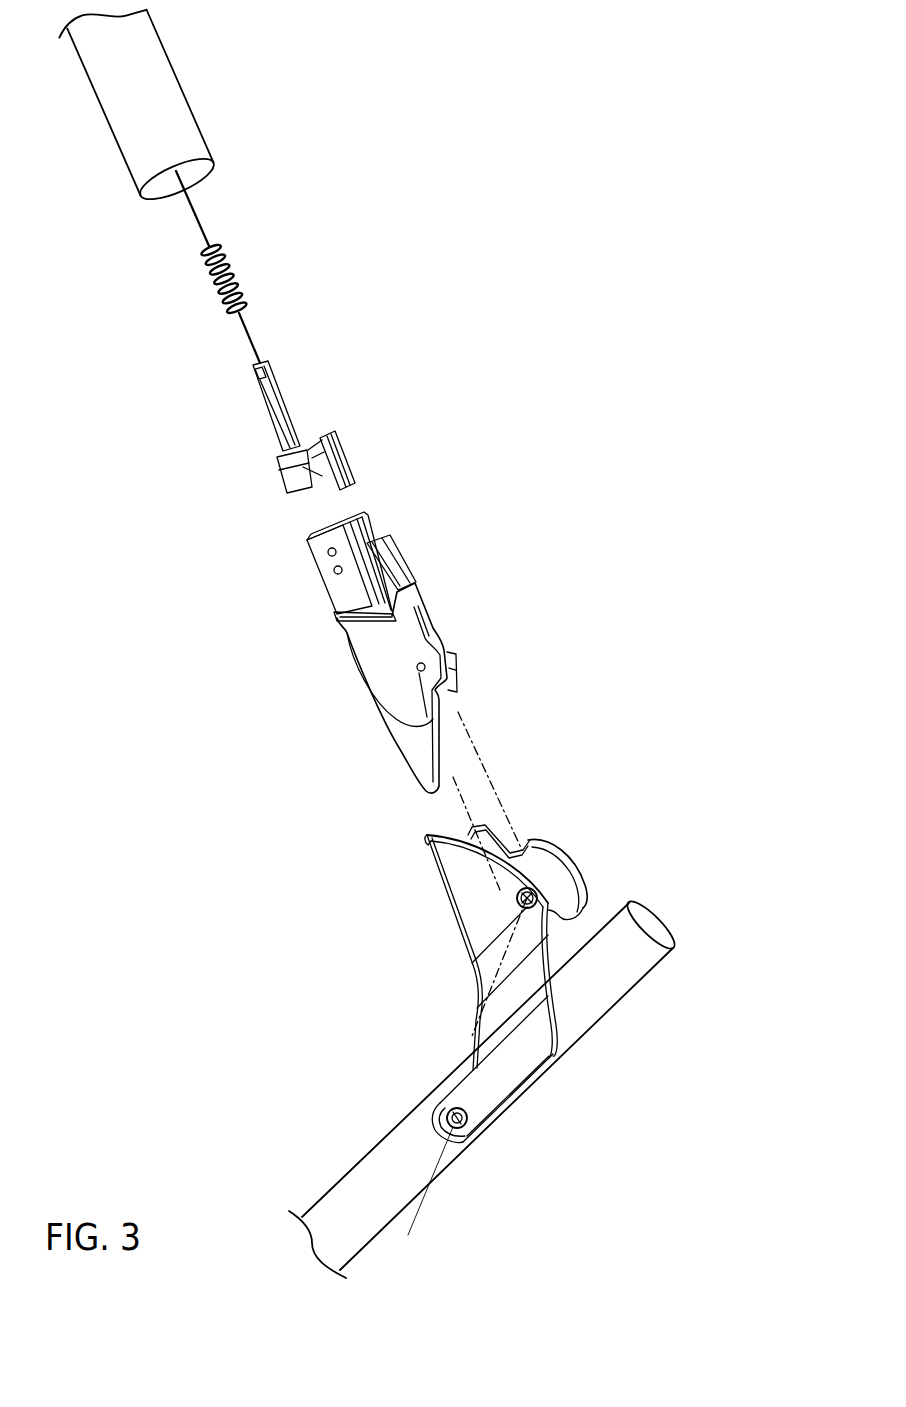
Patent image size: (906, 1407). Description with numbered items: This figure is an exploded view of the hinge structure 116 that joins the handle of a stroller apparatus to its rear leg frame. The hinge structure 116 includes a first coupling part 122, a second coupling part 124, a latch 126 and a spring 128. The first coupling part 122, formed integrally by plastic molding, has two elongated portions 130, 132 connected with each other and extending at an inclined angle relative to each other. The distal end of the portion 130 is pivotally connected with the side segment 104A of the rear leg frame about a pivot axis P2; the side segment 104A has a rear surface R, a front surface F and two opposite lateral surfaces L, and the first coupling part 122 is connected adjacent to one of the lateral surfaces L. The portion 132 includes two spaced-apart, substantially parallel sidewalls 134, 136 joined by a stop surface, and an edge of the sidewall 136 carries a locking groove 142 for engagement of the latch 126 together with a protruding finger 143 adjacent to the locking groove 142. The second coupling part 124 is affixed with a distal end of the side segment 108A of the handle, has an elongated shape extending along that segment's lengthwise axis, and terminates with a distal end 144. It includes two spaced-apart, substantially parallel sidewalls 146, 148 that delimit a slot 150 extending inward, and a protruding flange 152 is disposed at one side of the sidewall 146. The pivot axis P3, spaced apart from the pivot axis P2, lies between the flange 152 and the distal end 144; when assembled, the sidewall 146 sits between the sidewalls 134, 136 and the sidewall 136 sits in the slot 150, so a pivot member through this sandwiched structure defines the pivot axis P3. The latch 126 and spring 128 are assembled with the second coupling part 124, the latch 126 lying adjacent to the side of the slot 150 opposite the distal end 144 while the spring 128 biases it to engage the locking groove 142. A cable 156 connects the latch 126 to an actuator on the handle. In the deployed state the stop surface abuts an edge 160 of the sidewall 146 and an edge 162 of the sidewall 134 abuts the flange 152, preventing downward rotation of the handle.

The hinge structure 116 is at (562, 49).
The side segment of the handle 108A is at (120, 105).
The spring 128 is at (208, 272).
The cable 156 is at (246, 341).
The latch 126 is at (288, 481).
The second coupling part 124 is at (296, 568).
The slot 150 is at (462, 636).
The protruding flange 152 is at (348, 628).
The edge of the sidewall 160 is at (366, 670).
The sidewall 146 is at (410, 722).
The sidewall 148 is at (452, 706).
The distal end 144 is at (462, 778).
The protruding finger 143 is at (481, 828).
The locking groove 142 is at (525, 824).
The sidewall 136 is at (573, 878).
The edge of the sidewall 162 is at (426, 835).
The first coupling part 122 is at (398, 884).
The elongated portion 132 is at (436, 906).
The sidewall 134 is at (470, 940).
The pivot axis P3 is at (468, 1040).
The side segment of the rear leg frame 104A is at (381, 1163).
The elongated portion 130 is at (514, 1067).
The pivot axis P2 is at (424, 1204).
The rear surface R is at (313, 1190).
The front surface F is at (530, 1190).
The lateral surface L is at (333, 1237).